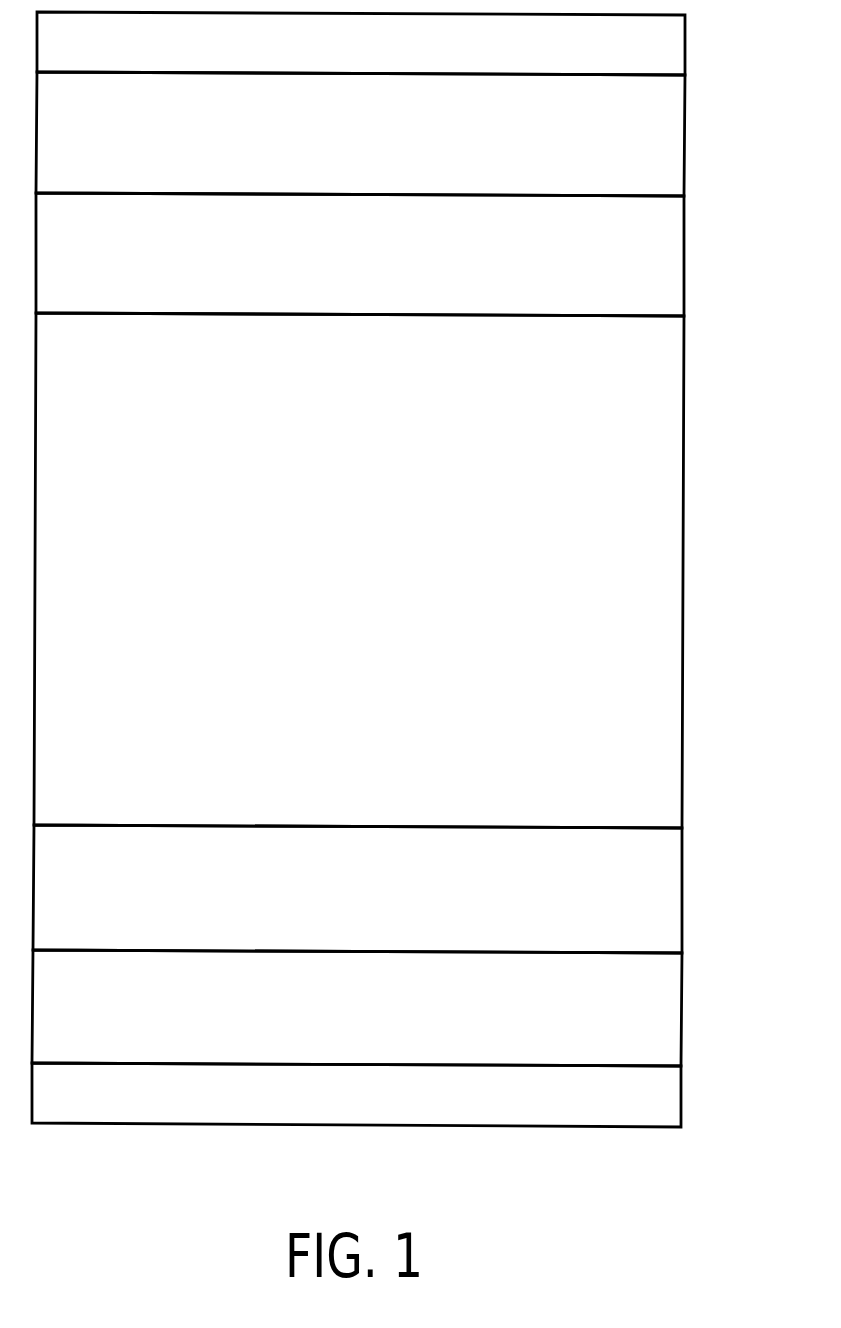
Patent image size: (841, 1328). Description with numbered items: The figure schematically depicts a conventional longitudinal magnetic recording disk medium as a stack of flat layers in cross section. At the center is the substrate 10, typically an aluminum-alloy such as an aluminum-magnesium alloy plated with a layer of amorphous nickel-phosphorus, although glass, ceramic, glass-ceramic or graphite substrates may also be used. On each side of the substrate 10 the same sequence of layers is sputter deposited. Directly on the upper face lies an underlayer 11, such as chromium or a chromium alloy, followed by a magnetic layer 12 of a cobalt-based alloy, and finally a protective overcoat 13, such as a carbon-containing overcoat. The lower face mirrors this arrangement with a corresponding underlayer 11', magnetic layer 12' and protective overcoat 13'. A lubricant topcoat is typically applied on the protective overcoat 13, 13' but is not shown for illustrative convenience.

The substrate 10 is at (683, 538).
The underlayer 11 is at (395, 254).
The magnetic layer 12 is at (398, 134).
The protective overcoat 13 is at (396, 43).
The underlayer 11' is at (400, 889).
The magnetic layer 12' is at (398, 1008).
The protective overcoat 13' is at (398, 1095).